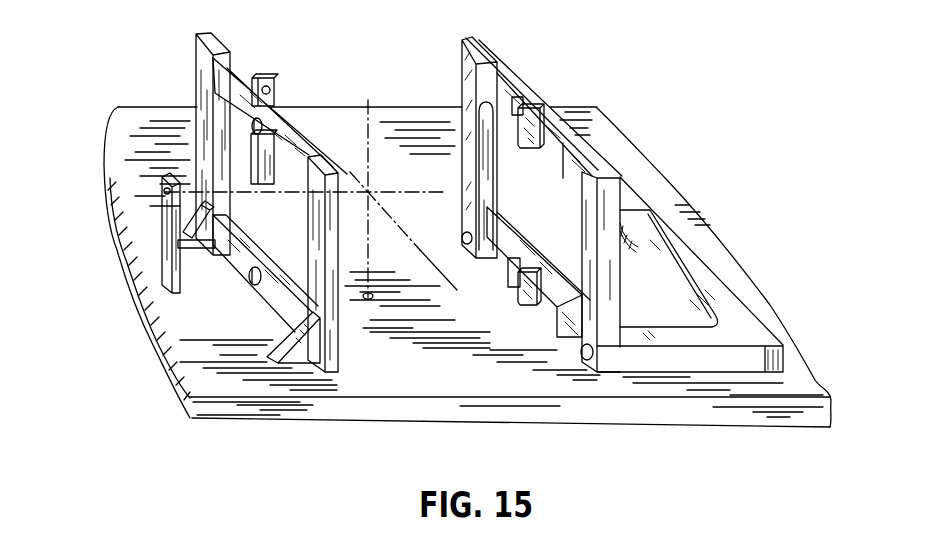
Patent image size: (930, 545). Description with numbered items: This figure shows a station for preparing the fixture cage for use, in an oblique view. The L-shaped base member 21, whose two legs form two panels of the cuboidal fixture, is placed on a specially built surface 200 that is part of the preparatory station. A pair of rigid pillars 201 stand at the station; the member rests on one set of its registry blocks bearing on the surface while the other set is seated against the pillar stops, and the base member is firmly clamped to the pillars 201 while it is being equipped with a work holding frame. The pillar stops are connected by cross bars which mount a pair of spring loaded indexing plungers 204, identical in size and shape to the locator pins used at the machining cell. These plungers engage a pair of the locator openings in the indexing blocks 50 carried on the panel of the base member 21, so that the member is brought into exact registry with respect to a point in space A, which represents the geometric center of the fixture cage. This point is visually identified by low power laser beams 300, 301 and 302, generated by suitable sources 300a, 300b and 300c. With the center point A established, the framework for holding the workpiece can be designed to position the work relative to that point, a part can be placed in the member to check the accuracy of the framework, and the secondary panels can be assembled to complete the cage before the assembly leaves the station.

The surface 200 is at (683, 200).
The pillars 201 is at (203, 62).
The indexing plungers 204 is at (250, 128).
The laser beam 300 is at (301, 196).
The laser beam source 300a is at (162, 184).
The laser beam source 300b is at (275, 80).
The laser beam source 300c is at (368, 298).
The laser beam 301 is at (430, 252).
The laser beam 302 is at (370, 130).
The geometric center A is at (372, 189).
The base member 21 is at (504, 64).
The indexing blocks 50 is at (523, 110).